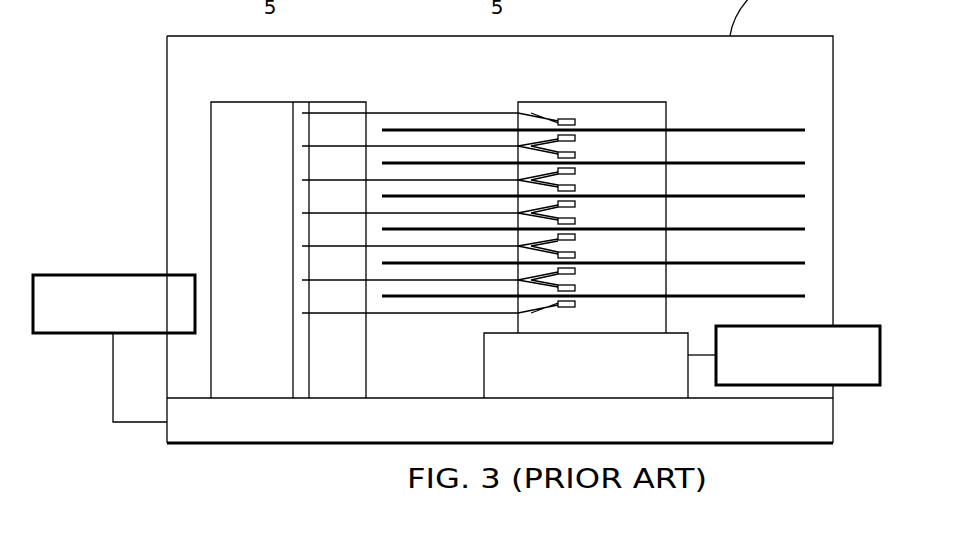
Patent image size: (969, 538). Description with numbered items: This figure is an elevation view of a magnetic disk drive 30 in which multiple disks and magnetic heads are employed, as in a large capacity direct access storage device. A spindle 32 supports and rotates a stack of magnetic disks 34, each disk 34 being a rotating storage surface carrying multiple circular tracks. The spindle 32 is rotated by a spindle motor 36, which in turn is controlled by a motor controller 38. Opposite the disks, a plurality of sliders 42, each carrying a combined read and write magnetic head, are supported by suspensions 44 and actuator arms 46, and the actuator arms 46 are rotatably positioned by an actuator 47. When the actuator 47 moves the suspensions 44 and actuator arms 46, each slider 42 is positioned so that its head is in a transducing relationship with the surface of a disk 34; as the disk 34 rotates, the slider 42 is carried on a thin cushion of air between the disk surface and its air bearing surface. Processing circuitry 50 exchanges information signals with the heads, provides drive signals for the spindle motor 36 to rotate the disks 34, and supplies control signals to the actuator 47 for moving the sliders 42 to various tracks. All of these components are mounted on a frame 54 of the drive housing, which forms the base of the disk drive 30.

The magnetic disk drive 30 is at (708, 97).
The spindle 32 is at (645, 102).
The magnetic disk 34 is at (783, 131).
The spindle motor 36 is at (580, 379).
The motor controller 38 is at (866, 388).
The slider 42 is at (566, 152).
The suspension 44 is at (533, 120).
The actuator arm 46 is at (468, 148).
The actuator 47 is at (247, 100).
The processing circuitry 50 is at (77, 334).
The frame 54 is at (286, 446).